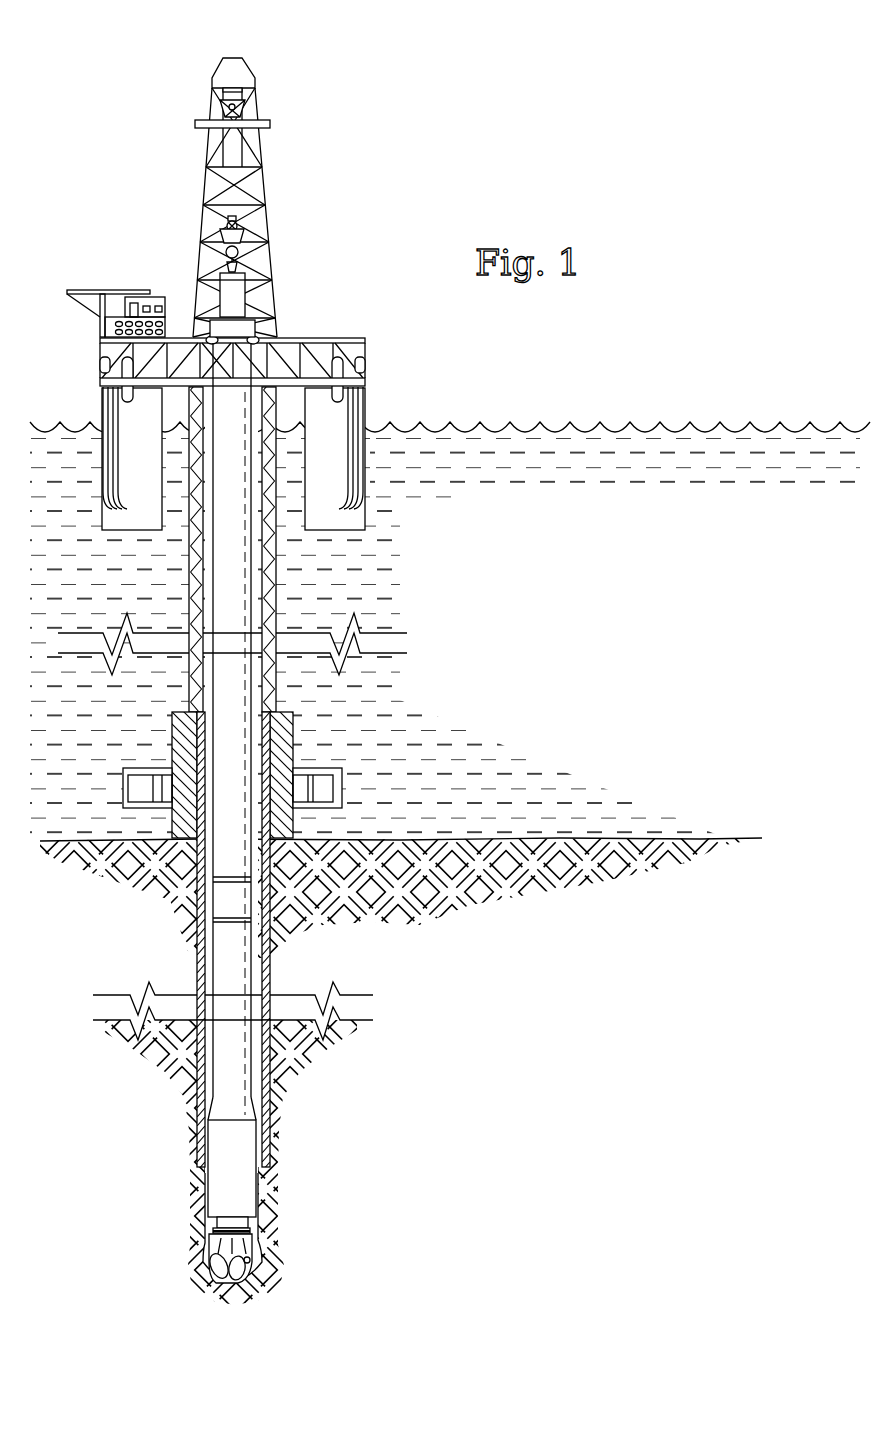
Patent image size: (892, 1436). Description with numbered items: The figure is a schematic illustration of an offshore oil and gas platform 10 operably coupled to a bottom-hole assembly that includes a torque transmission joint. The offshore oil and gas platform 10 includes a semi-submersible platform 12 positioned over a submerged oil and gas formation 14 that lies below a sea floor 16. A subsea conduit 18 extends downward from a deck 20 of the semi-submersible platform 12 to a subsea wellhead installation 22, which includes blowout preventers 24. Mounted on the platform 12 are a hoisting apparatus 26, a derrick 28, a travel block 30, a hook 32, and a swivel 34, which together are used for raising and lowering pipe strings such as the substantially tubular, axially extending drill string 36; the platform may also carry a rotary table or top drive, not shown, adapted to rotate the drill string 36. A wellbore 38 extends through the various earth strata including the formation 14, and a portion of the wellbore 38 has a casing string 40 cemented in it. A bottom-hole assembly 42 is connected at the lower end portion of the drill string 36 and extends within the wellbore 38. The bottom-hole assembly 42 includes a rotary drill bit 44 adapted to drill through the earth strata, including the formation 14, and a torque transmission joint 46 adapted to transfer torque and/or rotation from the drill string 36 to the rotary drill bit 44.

The offshore oil and gas platform 10 is at (114, 159).
The semi-submersible platform 12 is at (350, 337).
The oil and gas formation 14 is at (360, 1095).
The sea floor 16 is at (742, 838).
The subsea conduit 18 is at (278, 556).
The deck 20 is at (368, 383).
The subsea wellhead installation 22 is at (168, 751).
The blowout preventers 24 is at (330, 780).
The hoisting apparatus 26 is at (254, 303).
The derrick 28 is at (213, 102).
The travel block 30 is at (217, 233).
The hook 32 is at (213, 253).
The swivel 34 is at (252, 275).
The drill string 36 is at (247, 955).
The wellbore 38 is at (200, 958).
The casing string 40 is at (267, 1125).
The bottom-hole assembly 42 is at (178, 1176).
The rotary drill bit 44 is at (247, 1252).
The torque transmission joint 46 is at (227, 1187).